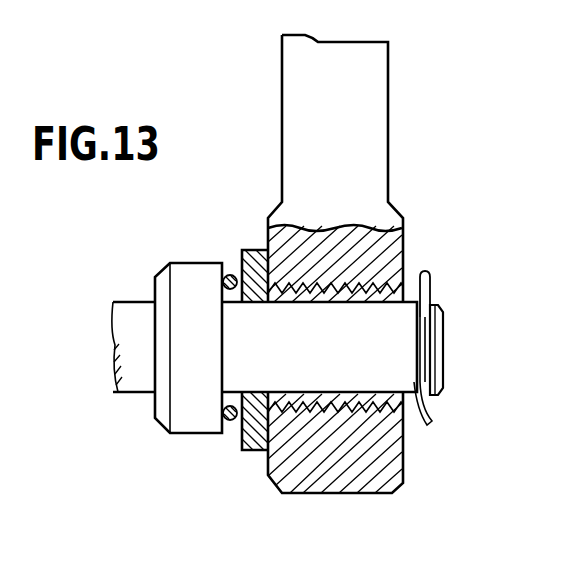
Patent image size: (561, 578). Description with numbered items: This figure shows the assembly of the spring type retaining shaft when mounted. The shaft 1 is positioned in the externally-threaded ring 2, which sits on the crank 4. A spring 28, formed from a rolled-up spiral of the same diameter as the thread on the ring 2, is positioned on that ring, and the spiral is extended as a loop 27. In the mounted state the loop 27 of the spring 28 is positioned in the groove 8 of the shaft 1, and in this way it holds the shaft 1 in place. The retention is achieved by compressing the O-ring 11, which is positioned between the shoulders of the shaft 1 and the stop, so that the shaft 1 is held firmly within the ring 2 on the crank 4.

The shaft 1 is at (140, 373).
The externally-threaded ring 2 is at (252, 254).
The crank 4 is at (368, 133).
The groove 8 is at (426, 352).
The O-ring 11 is at (230, 274).
The loop 27 is at (428, 272).
The spring 28 is at (433, 414).